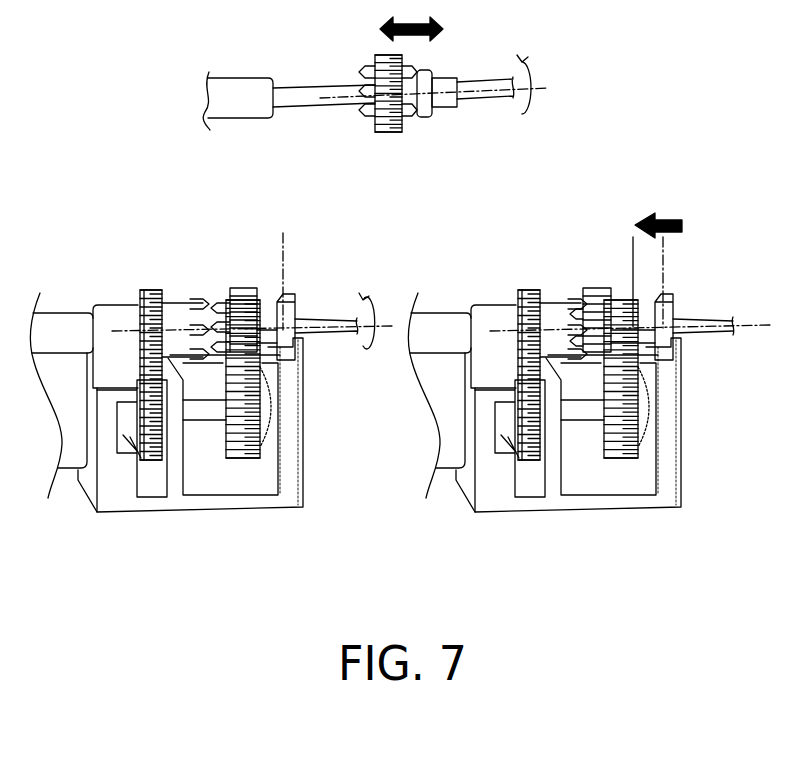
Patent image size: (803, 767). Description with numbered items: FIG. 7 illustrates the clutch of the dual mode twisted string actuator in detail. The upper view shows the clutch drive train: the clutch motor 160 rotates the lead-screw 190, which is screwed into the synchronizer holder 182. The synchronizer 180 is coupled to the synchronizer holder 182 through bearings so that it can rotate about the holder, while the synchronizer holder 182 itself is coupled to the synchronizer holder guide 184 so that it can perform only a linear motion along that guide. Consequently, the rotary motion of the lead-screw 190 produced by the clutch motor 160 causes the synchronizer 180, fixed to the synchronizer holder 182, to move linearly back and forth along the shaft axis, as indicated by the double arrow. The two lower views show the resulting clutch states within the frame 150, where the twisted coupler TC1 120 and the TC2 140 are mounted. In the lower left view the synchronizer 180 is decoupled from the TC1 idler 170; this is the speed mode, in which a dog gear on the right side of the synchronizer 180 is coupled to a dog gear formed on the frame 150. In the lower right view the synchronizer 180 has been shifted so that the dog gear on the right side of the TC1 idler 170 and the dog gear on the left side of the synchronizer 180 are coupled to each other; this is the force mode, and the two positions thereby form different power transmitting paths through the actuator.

The twisted coupler 1 120 is at (148, 460).
The TC2 140 is at (243, 457).
The frame 150 is at (290, 310).
The clutch motor 160 is at (241, 88).
The TC1 idler 170 is at (174, 308).
The synchronizer 180 is at (388, 133).
The synchronizer holder 182 is at (427, 118).
The synchronizer holder guide 184 is at (450, 104).
The lead-screw 190 is at (485, 86).